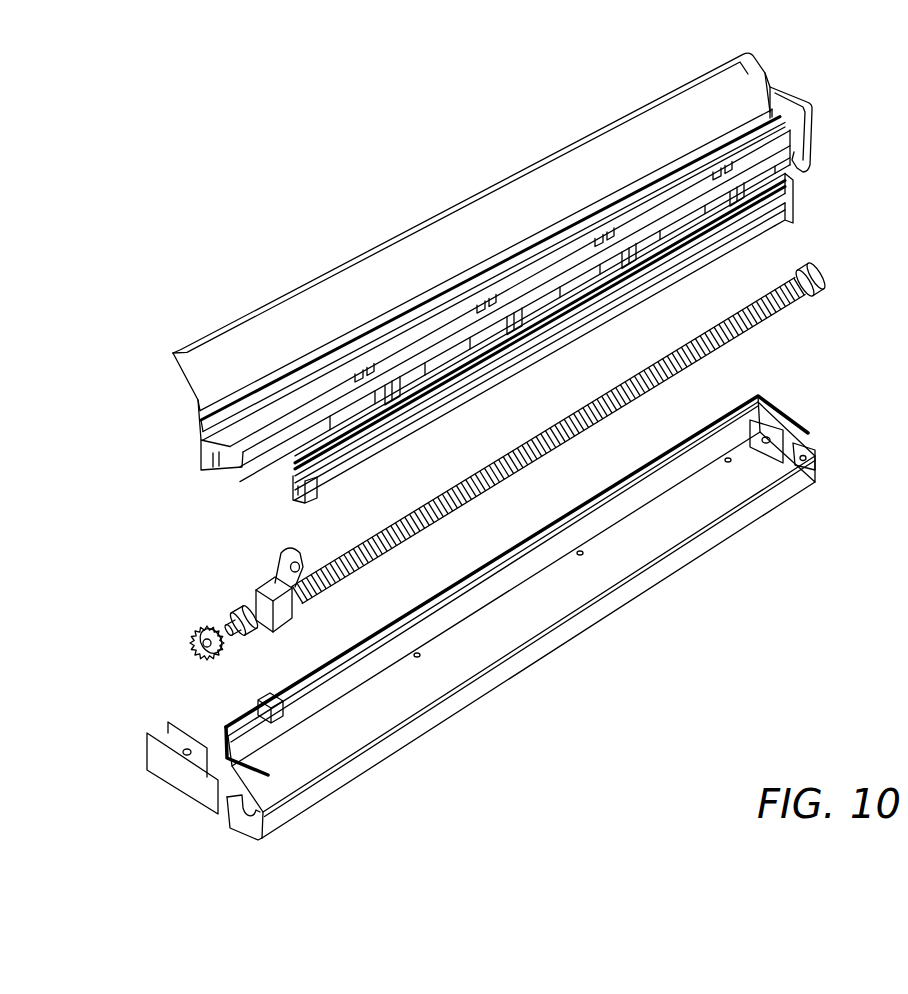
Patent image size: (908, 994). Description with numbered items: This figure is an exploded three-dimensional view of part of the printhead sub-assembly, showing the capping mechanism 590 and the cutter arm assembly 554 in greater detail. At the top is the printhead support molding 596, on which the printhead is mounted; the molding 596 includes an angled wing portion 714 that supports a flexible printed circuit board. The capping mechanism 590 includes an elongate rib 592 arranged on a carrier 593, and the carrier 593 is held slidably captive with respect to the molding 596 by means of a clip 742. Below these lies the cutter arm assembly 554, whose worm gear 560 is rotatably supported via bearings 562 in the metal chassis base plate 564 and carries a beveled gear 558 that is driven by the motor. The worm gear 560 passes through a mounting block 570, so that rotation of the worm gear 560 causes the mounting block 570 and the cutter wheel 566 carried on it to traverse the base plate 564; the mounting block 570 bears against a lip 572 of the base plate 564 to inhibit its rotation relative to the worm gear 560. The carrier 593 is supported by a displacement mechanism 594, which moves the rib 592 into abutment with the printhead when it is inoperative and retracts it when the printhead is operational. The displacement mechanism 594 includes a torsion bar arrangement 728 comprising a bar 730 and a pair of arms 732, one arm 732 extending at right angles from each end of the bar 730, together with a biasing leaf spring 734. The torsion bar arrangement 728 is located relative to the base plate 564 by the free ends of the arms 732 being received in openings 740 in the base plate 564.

The angled wing portion 714 is at (767, 80).
The capping mechanism 590 is at (498, 309).
The printhead support molding 596 is at (198, 432).
The clip 742 is at (594, 326).
The elongate rib 592 is at (784, 197).
The carrier 593 is at (795, 220).
The worm gear 560 is at (773, 312).
The bearings 562 is at (826, 281).
The cutter arm assembly 554 is at (249, 651).
The beveled gear 558 is at (197, 630).
The mounting block 570 is at (290, 617).
The cutter wheel 566 is at (283, 556).
The chassis base plate 564 is at (583, 656).
The bar 730 is at (618, 478).
The torsion bar arrangement 728 is at (495, 549).
The lip 572 is at (650, 580).
The openings 740 is at (806, 484).
The arms 732 is at (792, 412).
The leaf spring 734 is at (284, 708).
The displacement mechanism 594 is at (230, 758).